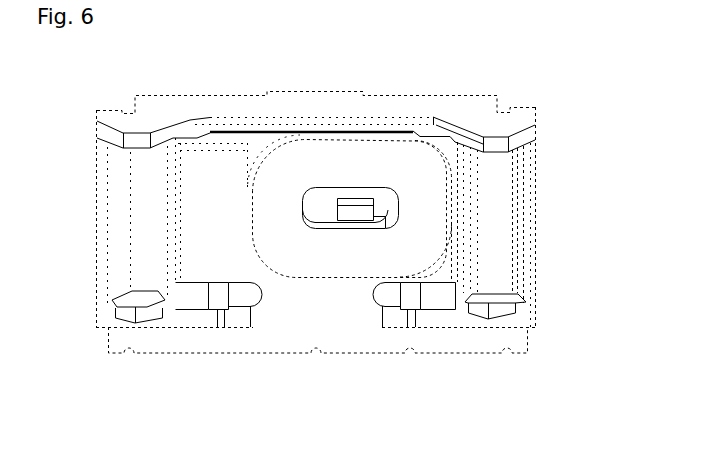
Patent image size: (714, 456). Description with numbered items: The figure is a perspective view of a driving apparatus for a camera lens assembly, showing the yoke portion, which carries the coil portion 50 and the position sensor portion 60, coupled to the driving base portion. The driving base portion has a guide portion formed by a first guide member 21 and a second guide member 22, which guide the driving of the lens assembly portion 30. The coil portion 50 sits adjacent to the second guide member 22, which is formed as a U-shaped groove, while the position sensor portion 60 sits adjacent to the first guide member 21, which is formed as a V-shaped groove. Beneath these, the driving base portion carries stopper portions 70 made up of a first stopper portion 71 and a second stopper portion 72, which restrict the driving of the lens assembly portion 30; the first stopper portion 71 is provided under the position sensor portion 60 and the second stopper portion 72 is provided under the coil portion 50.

The first guide member 21 is at (140, 213).
The second guide member 22 is at (498, 207).
The lens assembly portion 30 is at (157, 97).
The coil portion 50 is at (385, 157).
The position sensor portion 60 is at (233, 160).
The stopper portions 70 is at (316, 370).
The first stopper portion 71 is at (223, 298).
The second stopper portion 72 is at (410, 298).